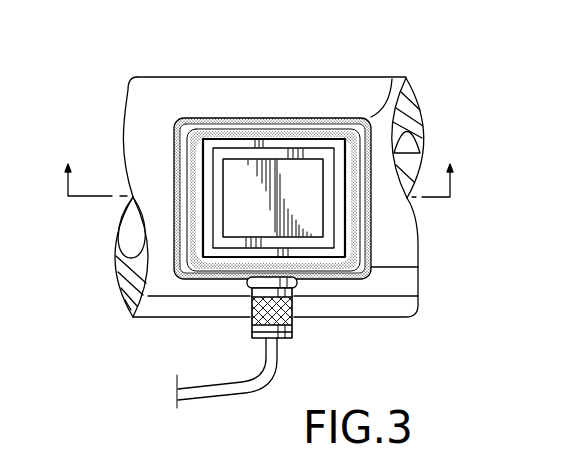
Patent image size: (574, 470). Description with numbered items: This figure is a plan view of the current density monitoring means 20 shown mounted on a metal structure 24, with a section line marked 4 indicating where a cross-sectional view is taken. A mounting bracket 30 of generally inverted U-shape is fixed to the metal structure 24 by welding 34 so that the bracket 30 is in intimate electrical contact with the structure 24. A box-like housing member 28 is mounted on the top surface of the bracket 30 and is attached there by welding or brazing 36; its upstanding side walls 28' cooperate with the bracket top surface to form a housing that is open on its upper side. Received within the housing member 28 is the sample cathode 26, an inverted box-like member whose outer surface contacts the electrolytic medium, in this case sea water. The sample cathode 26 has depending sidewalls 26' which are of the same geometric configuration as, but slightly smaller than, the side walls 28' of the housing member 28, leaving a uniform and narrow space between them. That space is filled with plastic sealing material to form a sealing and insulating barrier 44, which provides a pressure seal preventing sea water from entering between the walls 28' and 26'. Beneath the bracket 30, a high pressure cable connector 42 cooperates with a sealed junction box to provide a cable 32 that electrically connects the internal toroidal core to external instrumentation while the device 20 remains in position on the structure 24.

The current density monitoring means 20 is at (331, 88).
The metal structure 24 is at (313, 77).
The sample cathode 26 is at (225, 188).
The depending sidewalls 26' is at (353, 198).
The housing member 28 is at (273, 146).
The side walls 28' is at (239, 247).
The mounting bracket 30 is at (395, 86).
The cable 32 is at (210, 386).
The welding 34 is at (195, 118).
The welding or brazing 36 is at (227, 129).
The high pressure cable connector 42 is at (247, 312).
The sealing and insulating barrier 44 is at (207, 210).
The section line 4- 4 is at (259, 167).